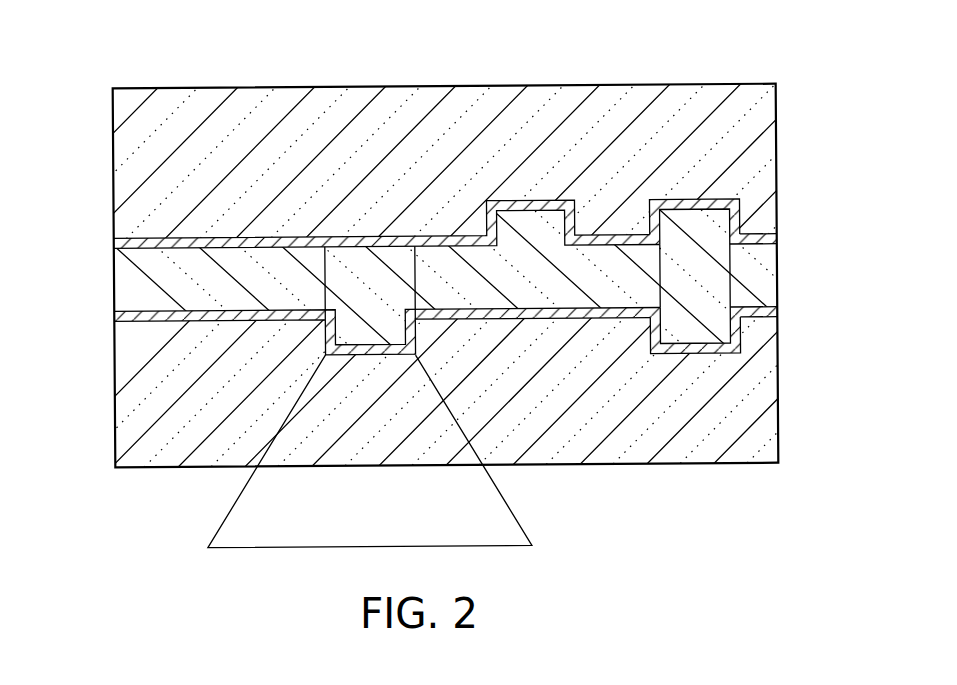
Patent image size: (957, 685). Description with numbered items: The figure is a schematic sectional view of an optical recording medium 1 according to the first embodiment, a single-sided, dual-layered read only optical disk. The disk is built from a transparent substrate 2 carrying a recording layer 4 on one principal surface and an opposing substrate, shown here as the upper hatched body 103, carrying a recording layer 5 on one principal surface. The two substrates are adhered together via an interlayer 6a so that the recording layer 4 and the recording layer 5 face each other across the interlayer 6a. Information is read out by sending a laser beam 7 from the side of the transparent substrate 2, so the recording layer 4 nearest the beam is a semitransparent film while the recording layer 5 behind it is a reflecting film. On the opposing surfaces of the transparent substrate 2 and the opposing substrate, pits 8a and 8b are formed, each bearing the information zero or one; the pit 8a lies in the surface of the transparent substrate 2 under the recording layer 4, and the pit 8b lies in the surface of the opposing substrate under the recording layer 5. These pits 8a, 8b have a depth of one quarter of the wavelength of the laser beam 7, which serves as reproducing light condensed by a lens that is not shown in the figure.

The optical recording medium 1 is at (722, 80).
The upper insulating layer 103 is at (127, 132).
The recording layer 5 is at (129, 241).
The interlayer 6a is at (125, 282).
The recording layer 4 is at (127, 320).
The transparent substrate 2 is at (127, 395).
The laser beam 7 is at (227, 512).
The pit 8a is at (708, 356).
The pit 8b is at (670, 199).